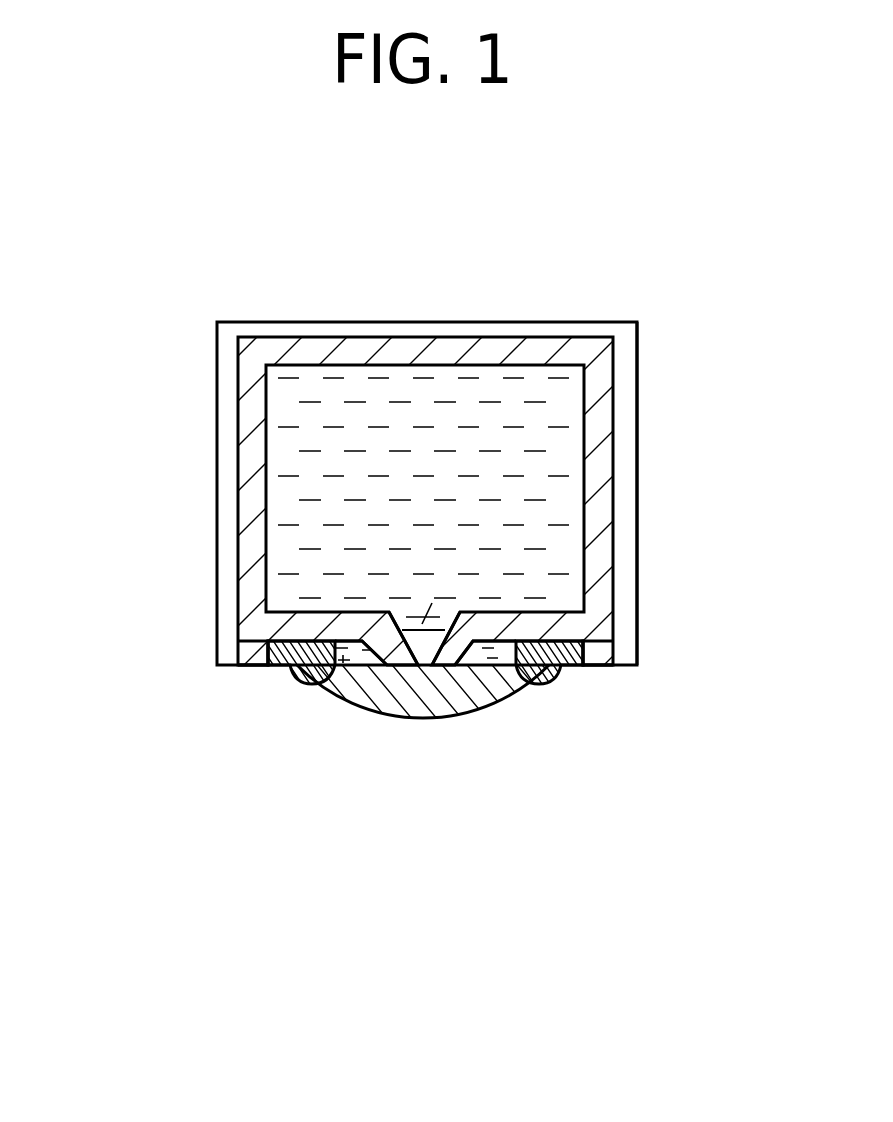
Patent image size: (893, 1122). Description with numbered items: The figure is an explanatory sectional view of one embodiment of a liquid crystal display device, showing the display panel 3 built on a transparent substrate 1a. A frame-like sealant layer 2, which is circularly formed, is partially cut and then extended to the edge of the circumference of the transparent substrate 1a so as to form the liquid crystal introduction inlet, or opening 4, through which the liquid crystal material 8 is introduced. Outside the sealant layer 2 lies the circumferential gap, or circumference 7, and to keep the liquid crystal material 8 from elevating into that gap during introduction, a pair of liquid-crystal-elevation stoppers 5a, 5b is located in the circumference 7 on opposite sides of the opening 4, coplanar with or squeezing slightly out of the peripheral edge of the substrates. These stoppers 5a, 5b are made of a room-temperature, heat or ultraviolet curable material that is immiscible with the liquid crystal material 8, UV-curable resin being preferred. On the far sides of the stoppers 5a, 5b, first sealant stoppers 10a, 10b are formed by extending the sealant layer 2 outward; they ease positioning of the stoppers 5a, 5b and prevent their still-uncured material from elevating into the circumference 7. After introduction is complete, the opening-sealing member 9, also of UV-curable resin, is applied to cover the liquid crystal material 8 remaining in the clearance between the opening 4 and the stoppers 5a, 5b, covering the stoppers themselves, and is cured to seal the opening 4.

The transparent substrate 1a is at (622, 333).
The frame-like sealant layer 2 is at (605, 422).
The display panel 3 is at (387, 309).
The liquid crystal introduction inlet 4 is at (431, 700).
The liquid-crystal-elevation stopper 5a is at (539, 674).
The liquid-crystal-elevation stopper 5b is at (313, 674).
The circumference 7 is at (636, 468).
The liquid crystal material 8 is at (381, 680).
The liquid crystal introduction inlet sealing portion 9 is at (466, 694).
The first sealant stopper 10a is at (603, 655).
The first sealant stopper 10b is at (252, 648).